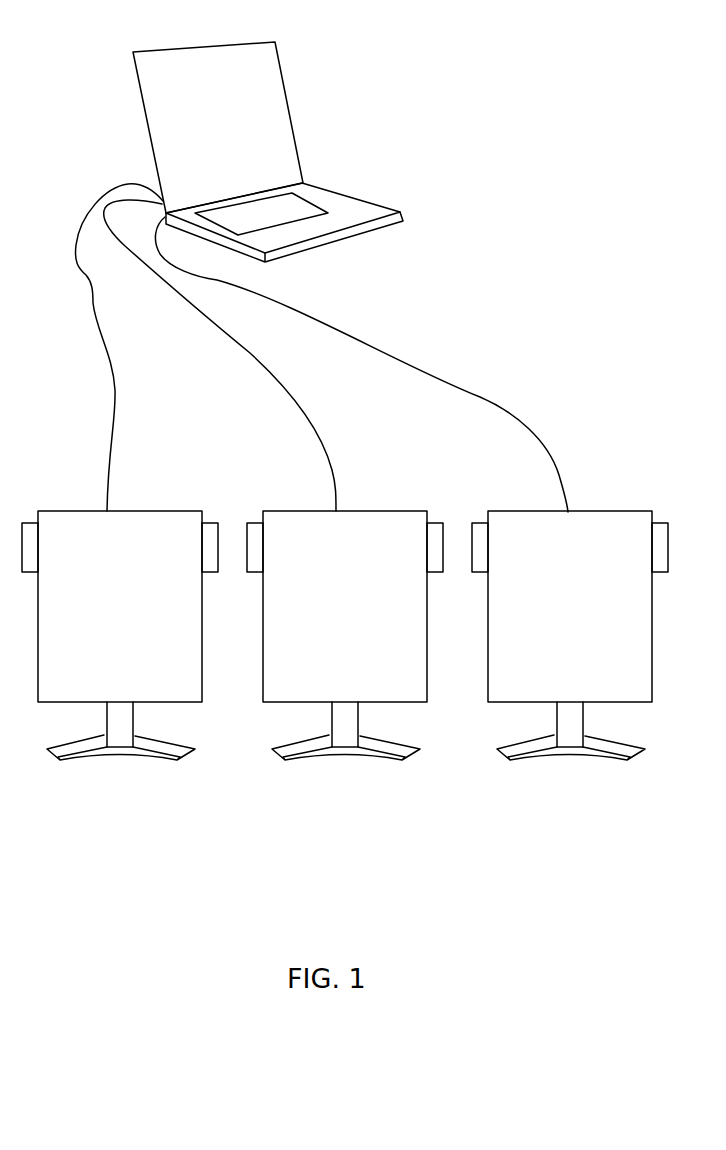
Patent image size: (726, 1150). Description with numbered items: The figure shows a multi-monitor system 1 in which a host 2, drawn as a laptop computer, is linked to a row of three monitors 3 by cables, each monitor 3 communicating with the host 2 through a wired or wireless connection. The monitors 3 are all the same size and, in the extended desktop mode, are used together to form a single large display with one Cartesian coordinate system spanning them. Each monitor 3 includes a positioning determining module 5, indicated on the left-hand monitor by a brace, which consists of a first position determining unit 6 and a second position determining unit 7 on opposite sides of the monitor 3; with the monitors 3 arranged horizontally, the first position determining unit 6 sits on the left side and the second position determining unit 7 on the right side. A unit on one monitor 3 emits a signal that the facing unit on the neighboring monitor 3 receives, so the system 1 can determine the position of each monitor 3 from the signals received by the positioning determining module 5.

The multi-monitor system 1 is at (472, 252).
The host 2 is at (235, 121).
The monitor 3 is at (338, 535).
The positioning determining module 5 is at (75, 451).
The first position determining unit 6 is at (31, 523).
The second position determining unit 7 is at (212, 523).